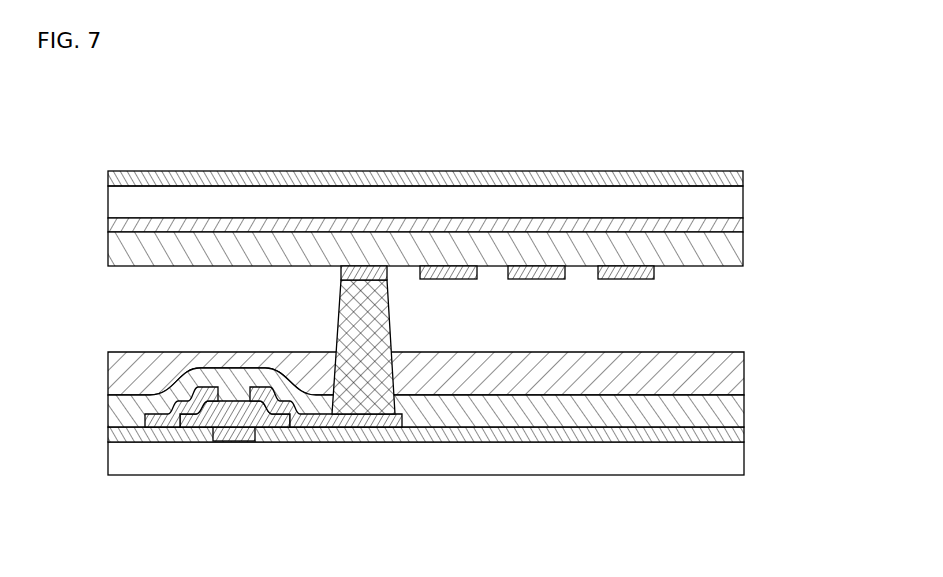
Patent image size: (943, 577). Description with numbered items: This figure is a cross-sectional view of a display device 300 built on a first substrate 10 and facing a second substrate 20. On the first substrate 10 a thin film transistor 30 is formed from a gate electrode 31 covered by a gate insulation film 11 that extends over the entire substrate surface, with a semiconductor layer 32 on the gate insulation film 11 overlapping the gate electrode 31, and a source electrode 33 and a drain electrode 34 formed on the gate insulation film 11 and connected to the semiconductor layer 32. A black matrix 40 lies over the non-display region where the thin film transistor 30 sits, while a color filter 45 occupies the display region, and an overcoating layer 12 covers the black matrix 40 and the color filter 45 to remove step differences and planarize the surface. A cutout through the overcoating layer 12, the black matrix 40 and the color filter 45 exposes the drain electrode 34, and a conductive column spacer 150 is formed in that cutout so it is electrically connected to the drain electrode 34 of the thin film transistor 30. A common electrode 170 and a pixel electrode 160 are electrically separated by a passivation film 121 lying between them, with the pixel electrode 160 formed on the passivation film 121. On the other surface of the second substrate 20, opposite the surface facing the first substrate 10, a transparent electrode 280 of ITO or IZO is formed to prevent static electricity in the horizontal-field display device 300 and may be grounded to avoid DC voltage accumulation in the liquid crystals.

The display device 300 is at (584, 103).
The transparent electrode 280 is at (740, 178).
The second substrate 20 is at (740, 204).
The common electrode 170 is at (740, 229).
The passivation film 121 is at (740, 255).
The pixel electrode 160 is at (383, 272).
The column spacer 150 is at (338, 311).
The overcoating layer 12 is at (740, 373).
The color filter 45 is at (426, 397).
The black matrix 40 is at (113, 410).
The gate insulation film 11 is at (740, 436).
The first substrate 10 is at (740, 463).
The thin film transistor 30 is at (243, 477).
The gate electrode 31 is at (235, 441).
The semiconductor layer 32 is at (280, 424).
The source electrode 33 is at (181, 458).
The drain electrode 34 is at (348, 427).